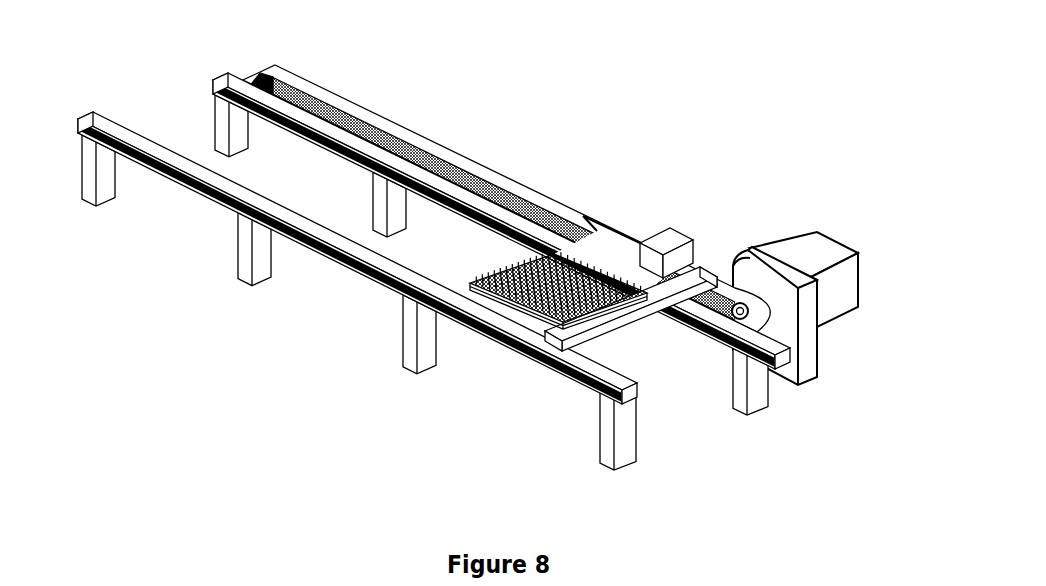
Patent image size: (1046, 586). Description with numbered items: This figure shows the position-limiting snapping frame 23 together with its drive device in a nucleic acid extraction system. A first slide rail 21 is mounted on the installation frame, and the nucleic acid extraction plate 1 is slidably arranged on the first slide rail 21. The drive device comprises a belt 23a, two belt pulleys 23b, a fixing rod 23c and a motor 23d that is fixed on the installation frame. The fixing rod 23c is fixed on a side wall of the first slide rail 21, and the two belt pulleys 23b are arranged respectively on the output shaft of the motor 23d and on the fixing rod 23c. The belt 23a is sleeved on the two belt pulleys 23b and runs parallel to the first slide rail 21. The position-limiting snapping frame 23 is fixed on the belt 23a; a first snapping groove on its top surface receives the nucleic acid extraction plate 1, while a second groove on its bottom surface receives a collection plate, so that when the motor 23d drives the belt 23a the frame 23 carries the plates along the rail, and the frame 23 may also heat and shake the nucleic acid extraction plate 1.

The nucleic acid extraction plate 1 is at (500, 293).
The first slide rail 21 is at (413, 275).
The position-limiting snapping frame 23 is at (663, 297).
The belt 23a is at (503, 170).
The belt pulleys 23b is at (267, 83).
The fixing rod 23c is at (257, 87).
The motor 23d is at (797, 248).